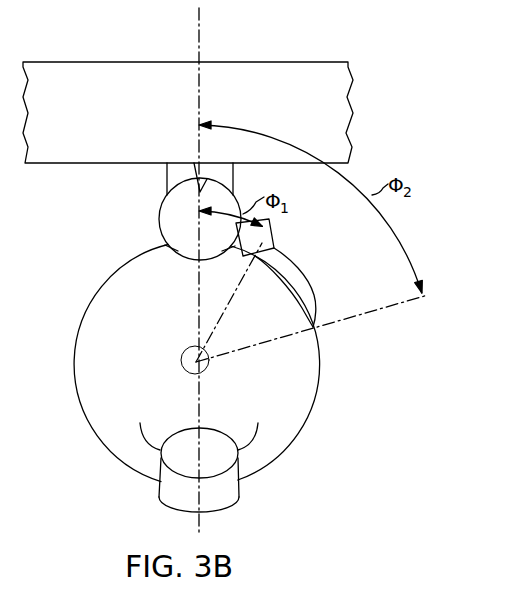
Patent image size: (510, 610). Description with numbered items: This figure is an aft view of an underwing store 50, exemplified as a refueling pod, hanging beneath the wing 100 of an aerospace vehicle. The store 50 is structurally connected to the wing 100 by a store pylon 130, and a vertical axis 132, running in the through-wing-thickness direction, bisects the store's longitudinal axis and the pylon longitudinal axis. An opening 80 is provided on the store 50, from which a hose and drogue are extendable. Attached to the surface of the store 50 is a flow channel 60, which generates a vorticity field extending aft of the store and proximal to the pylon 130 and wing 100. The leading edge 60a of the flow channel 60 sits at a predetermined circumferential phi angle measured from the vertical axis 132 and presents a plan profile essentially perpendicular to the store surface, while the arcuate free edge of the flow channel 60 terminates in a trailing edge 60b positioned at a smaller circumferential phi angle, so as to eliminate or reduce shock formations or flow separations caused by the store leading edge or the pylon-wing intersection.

The vertical axis 132 is at (200, 30).
The wing 100 is at (285, 71).
The store pylon 130 is at (167, 186).
The store 50 is at (85, 311).
The flow channel 60 is at (316, 277).
The trailing edge 60b is at (253, 255).
The leading edge 60a is at (315, 327).
The opening 80 is at (226, 493).